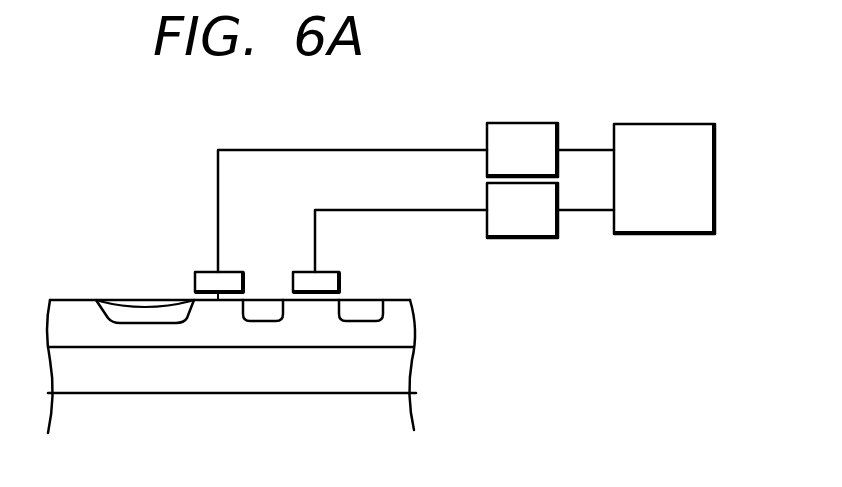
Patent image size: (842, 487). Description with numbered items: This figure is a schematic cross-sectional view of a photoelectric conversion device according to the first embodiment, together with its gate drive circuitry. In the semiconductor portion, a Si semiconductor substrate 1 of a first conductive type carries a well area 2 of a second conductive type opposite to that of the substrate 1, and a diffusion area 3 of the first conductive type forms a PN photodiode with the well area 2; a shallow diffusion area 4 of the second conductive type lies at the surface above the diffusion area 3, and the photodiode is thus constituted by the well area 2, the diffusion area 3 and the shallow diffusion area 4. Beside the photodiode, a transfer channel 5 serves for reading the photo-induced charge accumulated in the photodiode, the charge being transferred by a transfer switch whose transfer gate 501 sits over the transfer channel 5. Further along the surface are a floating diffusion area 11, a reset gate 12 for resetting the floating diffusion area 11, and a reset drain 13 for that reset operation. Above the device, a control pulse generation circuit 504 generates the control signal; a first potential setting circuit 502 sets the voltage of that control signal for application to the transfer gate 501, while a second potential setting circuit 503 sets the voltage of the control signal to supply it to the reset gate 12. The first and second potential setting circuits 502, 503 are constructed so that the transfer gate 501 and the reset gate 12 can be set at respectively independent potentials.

The Si semiconductor substrate 1 is at (178, 385).
The well area 2 is at (142, 340).
The diffusion area 3 is at (118, 307).
The shallow diffusion area 4 is at (143, 300).
The transfer channel 5 is at (219, 295).
The floating diffusion area 11 is at (265, 300).
The reset gate 12 is at (331, 272).
The reset drain 13 is at (377, 300).
The transfer gate 501 is at (206, 271).
The first potential setting circuit 502 is at (539, 123).
The second potential setting circuit 503 is at (548, 239).
The control pulse generation circuit 504 is at (696, 124).